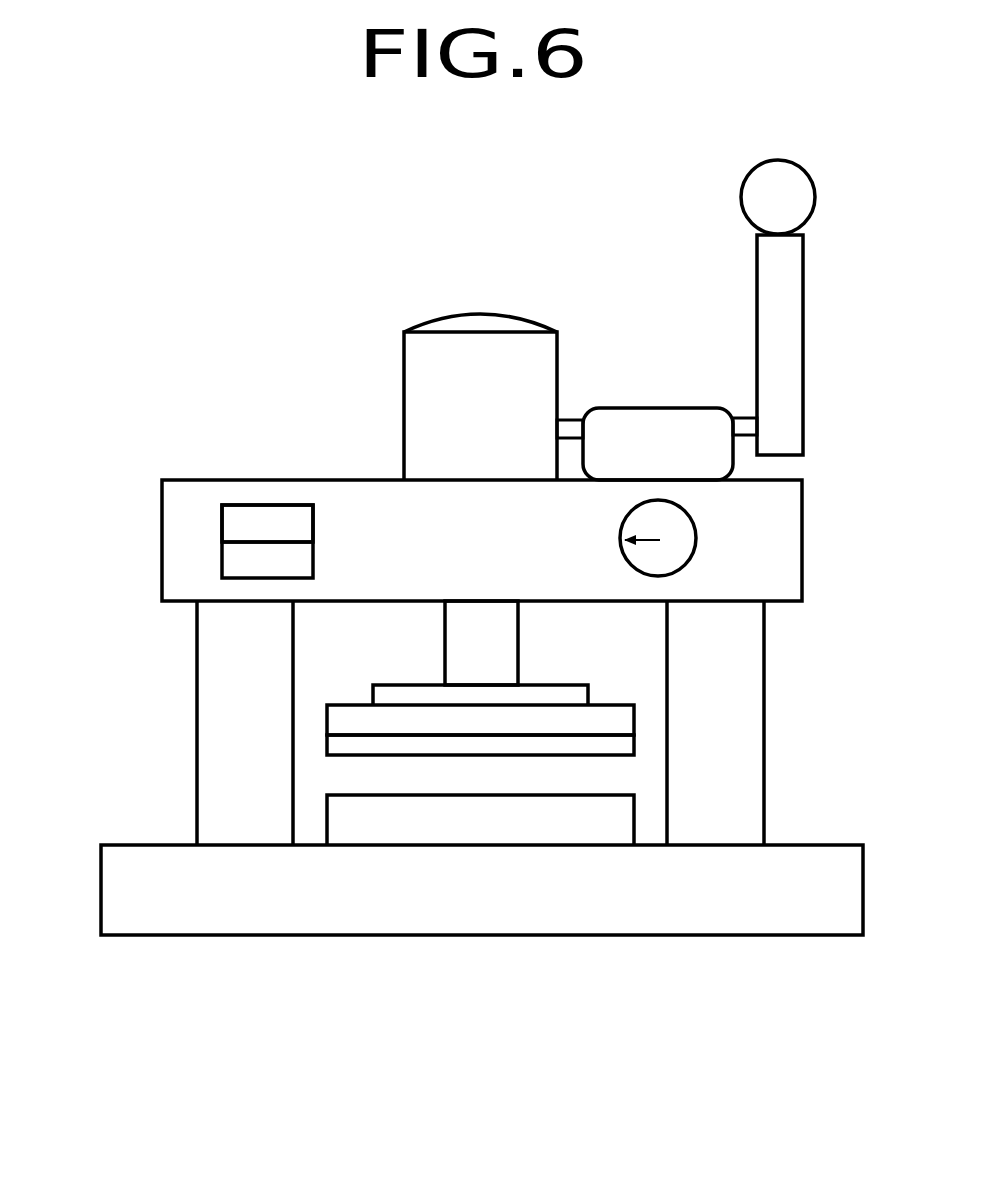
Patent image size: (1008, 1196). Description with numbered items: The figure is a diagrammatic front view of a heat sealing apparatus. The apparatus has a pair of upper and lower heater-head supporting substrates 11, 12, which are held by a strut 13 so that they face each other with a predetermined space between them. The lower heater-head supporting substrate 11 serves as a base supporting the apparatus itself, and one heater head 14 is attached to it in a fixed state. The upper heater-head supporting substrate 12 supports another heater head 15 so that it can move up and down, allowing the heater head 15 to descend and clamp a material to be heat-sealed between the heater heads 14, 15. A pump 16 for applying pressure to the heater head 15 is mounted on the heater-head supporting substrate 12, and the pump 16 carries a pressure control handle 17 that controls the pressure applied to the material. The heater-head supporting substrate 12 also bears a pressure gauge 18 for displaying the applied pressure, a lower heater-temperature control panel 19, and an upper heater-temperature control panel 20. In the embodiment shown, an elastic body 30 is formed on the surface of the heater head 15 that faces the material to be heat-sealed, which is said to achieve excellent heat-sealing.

The heater-head supporting substrate 11 is at (473, 918).
The heater-head supporting substrate 12 is at (175, 512).
The strut 13 is at (213, 726).
The heater head 14 is at (620, 818).
The heater head 15 is at (627, 713).
The pump 16 is at (480, 352).
The pressure control handle 17 is at (790, 300).
The pressure gauge 18 is at (690, 535).
The lower heater-temperature control panel 19 is at (230, 560).
The upper heater-temperature control panel 20 is at (267, 520).
The elastic body 30 is at (627, 743).